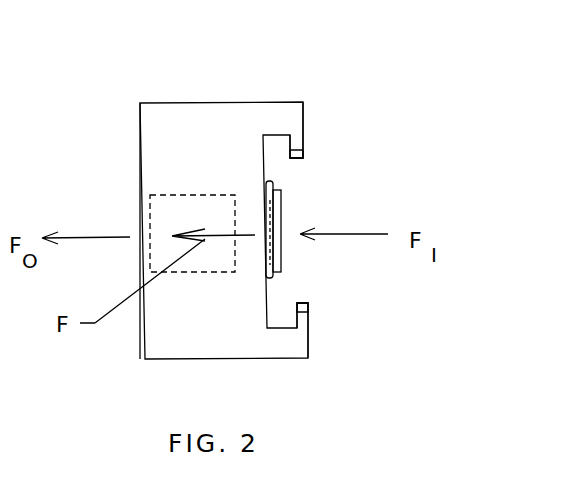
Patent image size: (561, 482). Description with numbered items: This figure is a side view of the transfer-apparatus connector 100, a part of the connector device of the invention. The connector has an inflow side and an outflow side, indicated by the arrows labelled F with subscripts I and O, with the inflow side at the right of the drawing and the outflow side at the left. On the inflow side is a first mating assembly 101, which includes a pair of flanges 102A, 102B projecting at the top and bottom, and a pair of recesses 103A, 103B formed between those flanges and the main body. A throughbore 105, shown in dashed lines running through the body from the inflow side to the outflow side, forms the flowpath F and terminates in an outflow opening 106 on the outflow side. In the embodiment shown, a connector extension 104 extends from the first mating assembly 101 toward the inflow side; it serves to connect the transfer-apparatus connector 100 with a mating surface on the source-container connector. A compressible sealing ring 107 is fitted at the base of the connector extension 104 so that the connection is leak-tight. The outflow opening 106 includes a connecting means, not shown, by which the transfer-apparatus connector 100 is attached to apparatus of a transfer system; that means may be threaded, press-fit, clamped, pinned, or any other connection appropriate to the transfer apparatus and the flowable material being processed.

The transfer-apparatus connector 100 is at (356, 83).
The first mating assembly 101 is at (264, 171).
The flange 102A is at (303, 310).
The flange 102B is at (303, 149).
The recess 103A is at (273, 316).
The recess 103B is at (270, 147).
The connector extension 104 is at (270, 253).
The throughbore 105 is at (170, 215).
The outflow opening 106 is at (148, 212).
The compressible sealing ring 107 is at (273, 193).